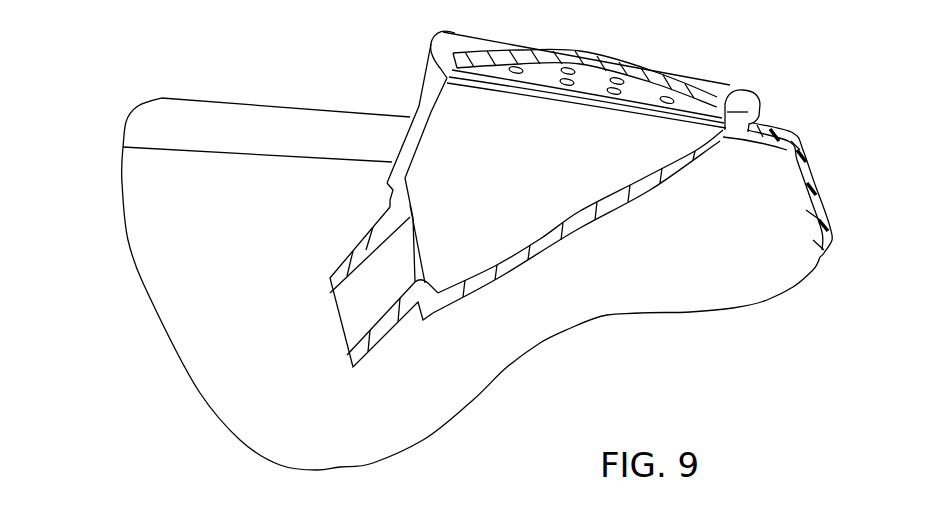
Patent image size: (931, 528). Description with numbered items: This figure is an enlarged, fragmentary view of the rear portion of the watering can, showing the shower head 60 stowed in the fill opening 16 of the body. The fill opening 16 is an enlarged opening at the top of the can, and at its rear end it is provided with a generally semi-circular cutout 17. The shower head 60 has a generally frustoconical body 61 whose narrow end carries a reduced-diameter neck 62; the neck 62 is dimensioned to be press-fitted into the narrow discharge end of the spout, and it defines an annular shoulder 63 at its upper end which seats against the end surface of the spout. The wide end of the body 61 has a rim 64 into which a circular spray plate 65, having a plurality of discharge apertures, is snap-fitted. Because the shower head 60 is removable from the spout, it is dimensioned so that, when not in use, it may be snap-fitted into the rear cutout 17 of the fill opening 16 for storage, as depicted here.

The fill opening 16 is at (318, 135).
The cutout 17 is at (747, 130).
The shower head 60 is at (636, 214).
The body 61 is at (512, 262).
The neck 62 is at (383, 330).
The annular shoulder 63 is at (388, 199).
The rim 64 is at (742, 103).
The spray plate 65 is at (627, 70).